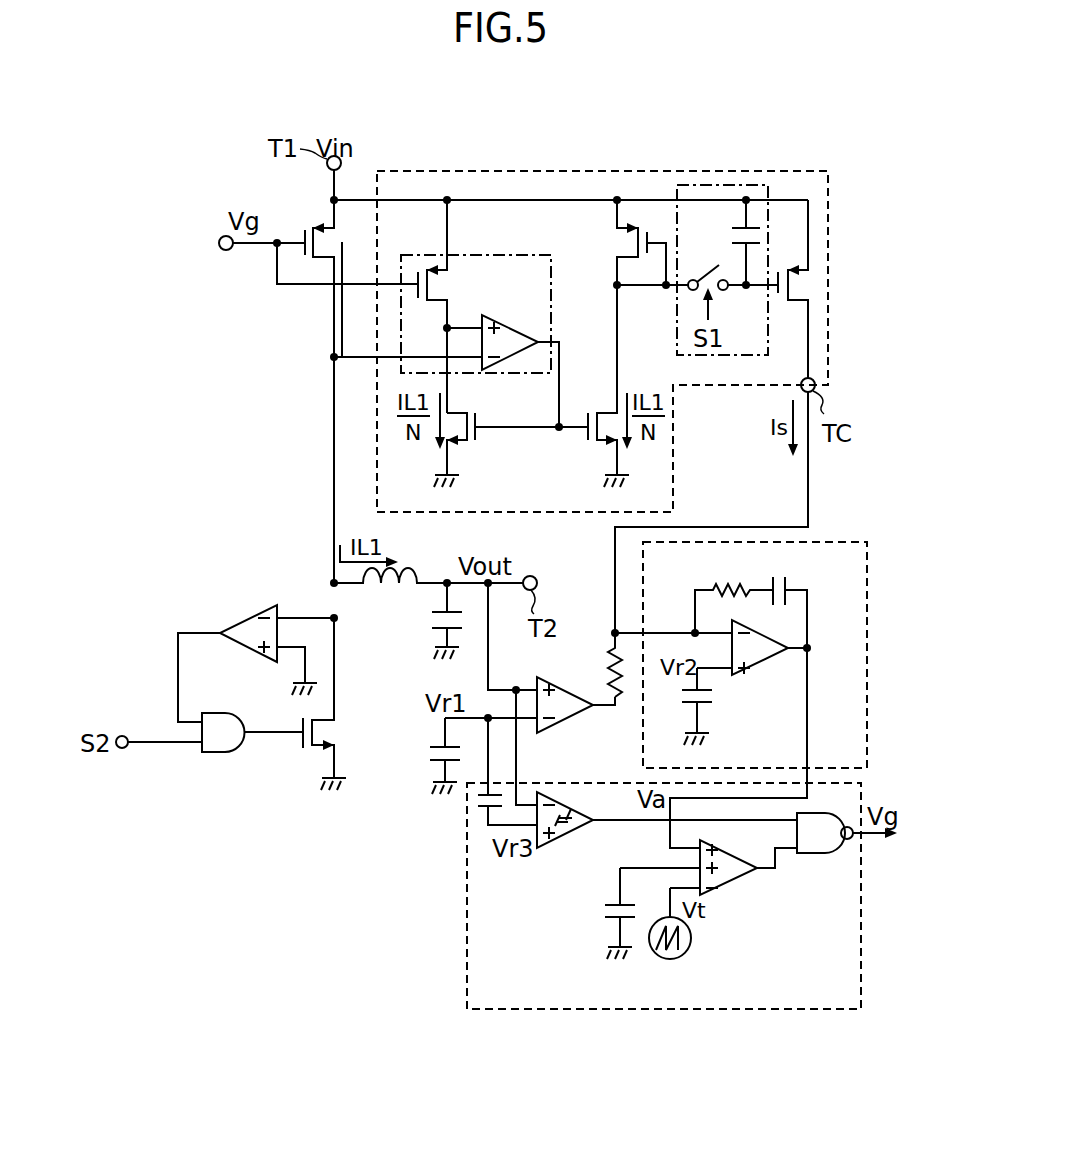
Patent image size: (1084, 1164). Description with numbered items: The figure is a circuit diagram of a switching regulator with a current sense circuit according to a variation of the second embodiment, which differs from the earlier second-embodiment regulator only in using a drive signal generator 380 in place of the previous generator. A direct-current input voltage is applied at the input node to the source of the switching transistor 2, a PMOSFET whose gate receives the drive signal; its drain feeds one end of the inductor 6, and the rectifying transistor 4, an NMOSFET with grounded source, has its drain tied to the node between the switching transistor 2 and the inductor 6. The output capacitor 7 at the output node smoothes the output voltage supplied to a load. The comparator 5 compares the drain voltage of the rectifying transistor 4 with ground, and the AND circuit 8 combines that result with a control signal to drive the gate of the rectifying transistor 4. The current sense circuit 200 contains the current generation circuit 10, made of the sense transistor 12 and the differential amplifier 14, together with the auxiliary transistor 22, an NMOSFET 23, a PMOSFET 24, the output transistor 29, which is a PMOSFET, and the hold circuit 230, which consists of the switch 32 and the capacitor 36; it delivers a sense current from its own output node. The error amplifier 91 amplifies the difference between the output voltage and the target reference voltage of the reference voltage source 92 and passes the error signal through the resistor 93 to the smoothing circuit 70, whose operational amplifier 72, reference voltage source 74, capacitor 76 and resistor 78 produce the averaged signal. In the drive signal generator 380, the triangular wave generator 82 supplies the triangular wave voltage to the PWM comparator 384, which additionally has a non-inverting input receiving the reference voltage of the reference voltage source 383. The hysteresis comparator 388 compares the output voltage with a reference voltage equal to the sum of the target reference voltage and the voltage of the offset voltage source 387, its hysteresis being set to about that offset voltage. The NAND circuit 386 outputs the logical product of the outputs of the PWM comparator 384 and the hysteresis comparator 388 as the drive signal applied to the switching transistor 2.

The switching transistor 2 is at (328, 224).
The rectifying transistor 4 is at (322, 730).
The comparator 5 is at (256, 655).
The inductor 6 is at (414, 569).
The output capacitor 7 is at (434, 629).
The AND circuit 8 is at (222, 752).
The current generation circuit 10 is at (551, 285).
The sense transistor 12 is at (438, 274).
The differential amplifier 14 is at (520, 358).
The auxiliary transistor 22 is at (476, 440).
The NMOSFET 23 is at (586, 440).
The PMOSFET 24 is at (632, 232).
The output transistor 29 is at (790, 301).
The switch 32 is at (716, 268).
The capacitor 36 is at (758, 232).
The smoothing circuit 70 is at (838, 542).
The operational amplifier 72 is at (773, 666).
The reference voltage source 74 is at (703, 701).
The capacitor 76 is at (789, 582).
The resistor 78 is at (726, 588).
The triangular wave generator 82 is at (686, 956).
The error amplifier 91 is at (570, 727).
The reference voltage source 92 is at (433, 751).
The resistor 93 is at (609, 660).
The current sense circuit 200 is at (636, 171).
The hold circuit 230 is at (740, 185).
The drive signal generator 380 is at (861, 966).
The reference voltage source 383 is at (606, 907).
The PWM comparator 384 is at (740, 895).
The NAND circuit 386 is at (820, 854).
The offset voltage source 387 is at (480, 808).
The hysteresis comparator 388 is at (575, 834).